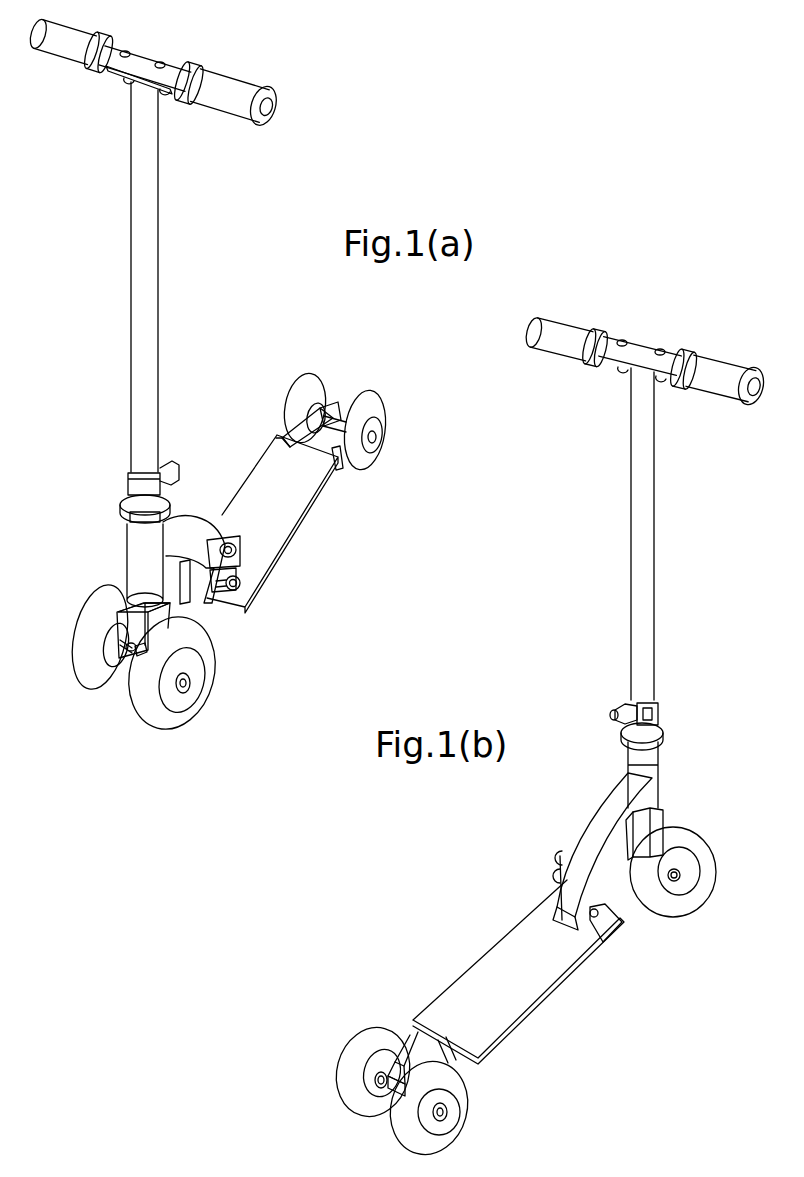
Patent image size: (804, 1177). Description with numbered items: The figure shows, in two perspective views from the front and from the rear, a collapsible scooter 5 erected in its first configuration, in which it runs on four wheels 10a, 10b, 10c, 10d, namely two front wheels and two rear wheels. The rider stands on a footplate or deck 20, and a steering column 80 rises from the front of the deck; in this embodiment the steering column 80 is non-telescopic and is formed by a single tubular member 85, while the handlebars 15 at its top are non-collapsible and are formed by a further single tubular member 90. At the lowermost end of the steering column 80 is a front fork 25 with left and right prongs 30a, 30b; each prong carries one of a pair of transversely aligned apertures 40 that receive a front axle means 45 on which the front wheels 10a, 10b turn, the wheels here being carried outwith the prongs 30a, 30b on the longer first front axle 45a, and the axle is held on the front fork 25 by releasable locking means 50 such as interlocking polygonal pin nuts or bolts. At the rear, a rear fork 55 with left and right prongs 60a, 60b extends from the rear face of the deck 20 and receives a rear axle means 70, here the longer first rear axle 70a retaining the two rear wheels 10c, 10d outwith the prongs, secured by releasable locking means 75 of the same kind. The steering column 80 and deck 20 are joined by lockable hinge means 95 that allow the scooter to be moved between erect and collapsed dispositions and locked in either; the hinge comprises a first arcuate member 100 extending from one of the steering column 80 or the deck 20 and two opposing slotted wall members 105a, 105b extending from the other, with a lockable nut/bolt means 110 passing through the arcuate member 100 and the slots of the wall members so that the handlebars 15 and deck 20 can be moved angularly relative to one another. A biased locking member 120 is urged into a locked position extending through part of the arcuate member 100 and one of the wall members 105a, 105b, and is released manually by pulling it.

In FIG. 1A, the scooter 5 is at (235, 293).
In FIG. 1B, the scooter 5 is at (692, 563).
In FIG. 1A, the front wheel 10a is at (172, 645).
In FIG. 1A, the front wheel 10b is at (88, 661).
In FIG. 1B, the front wheel 10b is at (688, 842).
In FIG. 1A, the rear wheel 10c is at (374, 408).
In FIG. 1B, the rear wheel 10c is at (383, 1042).
In FIG. 1A, the rear wheel 10d is at (300, 390).
In FIG. 1B, the rear wheel 10d is at (443, 1074).
In FIG. 1A, the handlebars 15 is at (186, 62).
In FIG. 1B, the handlebars 15 is at (641, 347).
In FIG. 1A, the footplate or deck 20 is at (276, 511).
In FIG. 1B, the footplate or deck 20 is at (531, 981).
In FIG. 1A, the front fork 25 is at (162, 625).
In FIG. 1B, the front fork 25 is at (652, 830).
In FIG. 1A, the left prong 30a is at (167, 607).
In FIG. 1B, the right prong 30b is at (655, 830).
In FIG. 1A, the apertures 40 is at (131, 650).
In FIG. 1B, the apertures 40 is at (378, 1082).
In FIG. 1A, the front axle means 45 is at (140, 657).
In FIG. 1A, the first front axle 45a is at (130, 650).
In FIG. 1A, the releasable locking means 50 is at (186, 688).
In FIG. 1A, the rear fork 55 is at (296, 438).
In FIG. 1A, the left prong 60a is at (338, 468).
In FIG. 1A, the right prong 60b is at (280, 441).
In FIG. 1A, the rear axle means 70 is at (348, 400).
In FIG. 1B, the rear axle means 70 is at (392, 1092).
In FIG. 1A, the first rear axle 70a is at (326, 403).
In FIG. 1B, the first rear axle 70a is at (396, 1073).
In FIG. 1A, the releasable locking means 75 is at (378, 438).
In FIG. 1A, the steering column 80 is at (143, 282).
In FIG. 1B, the steering column 80 is at (640, 515).
In FIG. 1A, the single member 85 is at (131, 247).
In FIG. 1B, the single member 85 is at (657, 470).
In FIG. 1A, the further single member 90 is at (230, 78).
In FIG. 1B, the further single member 90 is at (712, 353).
In FIG. 1A, the lockable hinge means 95 is at (236, 548).
In FIG. 1B, the lockable hinge means 95 is at (575, 872).
In FIG. 1A, the first arcuate member 100 is at (196, 532).
In FIG. 1B, the first arcuate member 100 is at (616, 810).
In FIG. 1A, the slotted wall member 105a is at (241, 585).
In FIG. 1B, the slotted wall member 105b is at (595, 918).
In FIG. 1A, the lockable nut/bolt means 110 is at (238, 552).
In FIG. 1A, the biased locking member 120 is at (238, 590).